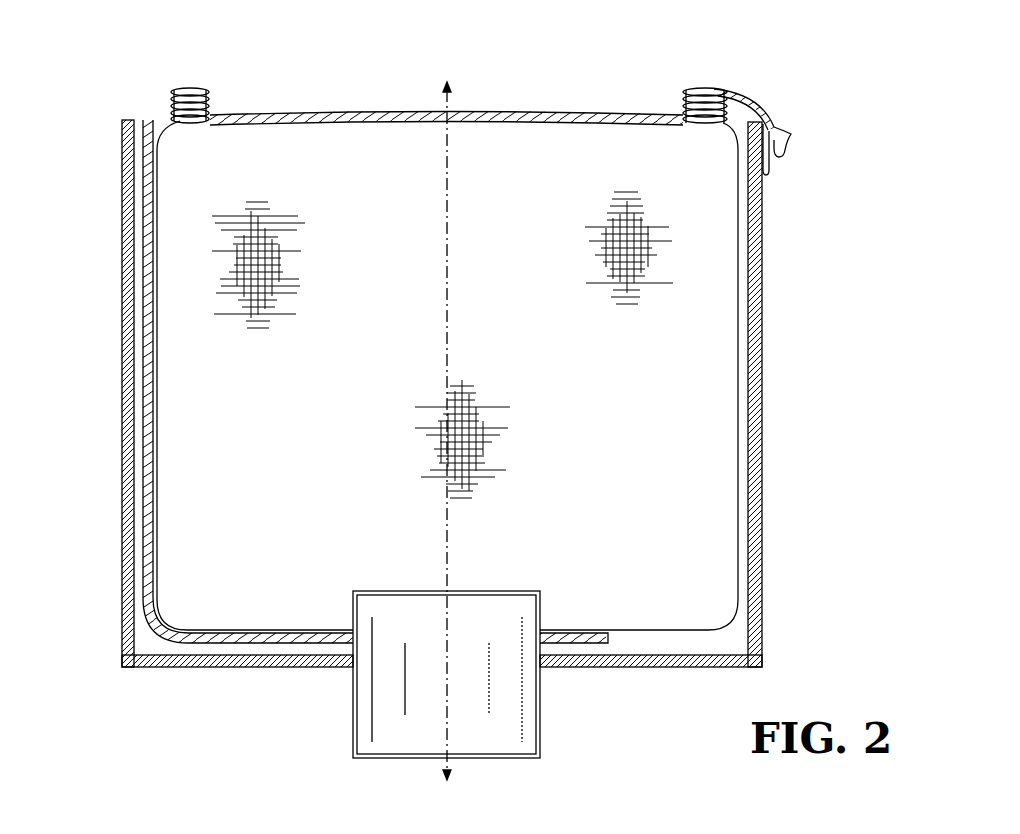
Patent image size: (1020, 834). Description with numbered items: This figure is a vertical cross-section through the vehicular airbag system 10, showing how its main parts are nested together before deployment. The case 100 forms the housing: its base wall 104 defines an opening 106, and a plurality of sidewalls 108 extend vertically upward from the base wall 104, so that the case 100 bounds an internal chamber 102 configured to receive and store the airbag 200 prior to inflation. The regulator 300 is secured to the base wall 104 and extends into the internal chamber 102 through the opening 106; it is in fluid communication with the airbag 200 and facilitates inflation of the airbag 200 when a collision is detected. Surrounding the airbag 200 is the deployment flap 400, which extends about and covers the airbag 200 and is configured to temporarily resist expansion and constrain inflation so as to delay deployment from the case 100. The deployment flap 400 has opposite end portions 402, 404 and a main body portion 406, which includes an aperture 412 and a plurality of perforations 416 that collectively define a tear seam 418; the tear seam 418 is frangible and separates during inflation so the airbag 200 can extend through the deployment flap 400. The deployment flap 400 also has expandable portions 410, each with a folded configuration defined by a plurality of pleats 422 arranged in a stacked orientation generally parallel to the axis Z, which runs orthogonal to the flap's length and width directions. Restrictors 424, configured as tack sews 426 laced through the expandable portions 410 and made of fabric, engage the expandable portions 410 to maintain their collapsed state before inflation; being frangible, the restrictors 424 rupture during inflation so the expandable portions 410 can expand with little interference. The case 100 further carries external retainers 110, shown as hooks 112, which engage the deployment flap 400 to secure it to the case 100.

The vehicular airbag system 10 is at (93, 80).
The case 100 is at (457, 423).
The internal chamber 102 is at (212, 652).
The base wall 104 is at (618, 674).
The opening 106 is at (548, 664).
The sidewalls 108 is at (122, 388).
The retainers 110 is at (801, 127).
The hooks 112 is at (789, 137).
The airbag 200 is at (744, 257).
The regulator 300 is at (349, 713).
The deployment flap 400 is at (479, 361).
The first end portion 402 is at (801, 62).
The second end portion 404 is at (433, 411).
The main body portion 406 is at (562, 105).
The expandable portion 410 is at (448, 115).
The aperture 412 is at (546, 637).
The perforations 416 is at (443, 116).
The tear seam 418 is at (462, 93).
The pleats 422 is at (216, 106).
The restrictor 424 is at (204, 136).
The tack sews 426 is at (175, 99).
The axis Z is at (447, 318).